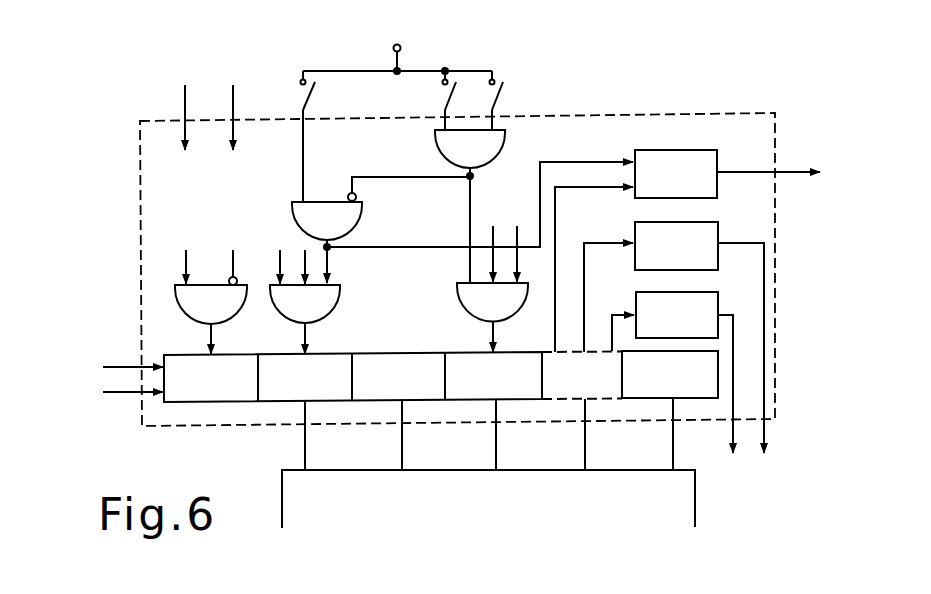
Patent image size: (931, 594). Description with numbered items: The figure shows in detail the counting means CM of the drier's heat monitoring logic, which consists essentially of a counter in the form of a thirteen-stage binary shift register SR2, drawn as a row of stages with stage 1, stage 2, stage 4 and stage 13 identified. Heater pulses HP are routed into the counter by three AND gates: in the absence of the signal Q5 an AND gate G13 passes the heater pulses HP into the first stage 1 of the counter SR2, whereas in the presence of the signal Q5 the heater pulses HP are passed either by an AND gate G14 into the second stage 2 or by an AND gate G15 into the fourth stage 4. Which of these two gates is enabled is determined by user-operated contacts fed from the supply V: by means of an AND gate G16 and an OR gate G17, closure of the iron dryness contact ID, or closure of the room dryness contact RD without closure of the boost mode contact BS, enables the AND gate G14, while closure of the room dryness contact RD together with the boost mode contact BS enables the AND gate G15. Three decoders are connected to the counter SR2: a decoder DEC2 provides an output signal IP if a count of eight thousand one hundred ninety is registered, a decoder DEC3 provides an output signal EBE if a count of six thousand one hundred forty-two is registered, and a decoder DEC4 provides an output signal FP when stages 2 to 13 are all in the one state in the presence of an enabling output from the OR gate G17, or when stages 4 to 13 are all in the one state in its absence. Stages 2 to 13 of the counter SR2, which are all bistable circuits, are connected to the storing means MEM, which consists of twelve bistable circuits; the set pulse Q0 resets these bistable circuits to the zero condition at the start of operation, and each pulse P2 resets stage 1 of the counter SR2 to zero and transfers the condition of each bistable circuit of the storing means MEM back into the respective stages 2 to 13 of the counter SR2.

The counting means CM is at (140, 248).
The AND gate G13 is at (220, 319).
The AND gate G14 is at (315, 319).
The AND gate G15 is at (479, 317).
The AND gate G16 is at (496, 204).
The OR gate G17 is at (462, 222).
The decoder DEC2 is at (651, 287).
The decoder DEC3 is at (665, 321).
The decoder DEC4 is at (636, 251).
The binary shift register SR2 is at (392, 416).
The stage 13 of the counter 13 is at (670, 374).
The stage 1 of the counter 1 is at (211, 379).
The stage 2 of the counter 2 is at (304, 379).
The stage 4 of the counter 4 is at (492, 378).
The storing means MEM is at (488, 463).
The iron dryness contact ID is at (323, 136).
The boost mode contact BS is at (431, 100).
The room dryness contact RD is at (517, 100).
The heater pulses HP is at (280, 248).
The signal Q5 is at (517, 226).
The set pulse Q0 is at (98, 337).
The pulse P2 is at (121, 409).
The output signal FP is at (768, 156).
The output signal IP is at (758, 357).
The output signal EBE is at (725, 401).
The supply voltage + V is at (397, 54).